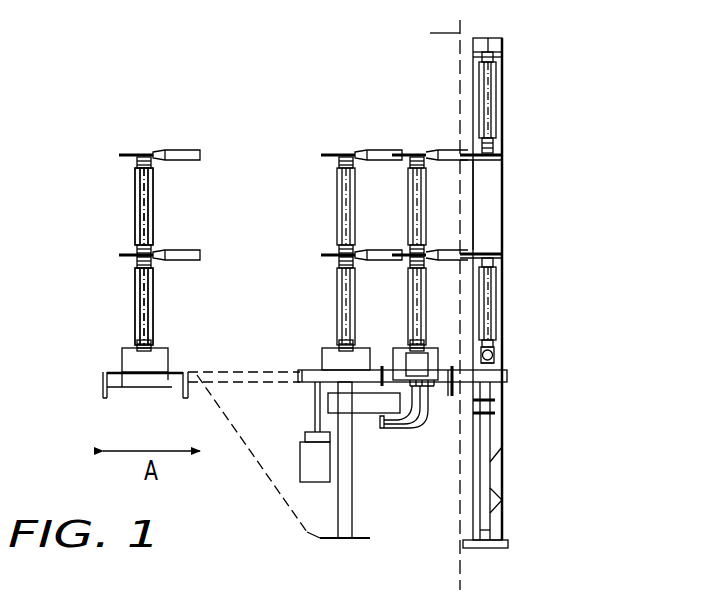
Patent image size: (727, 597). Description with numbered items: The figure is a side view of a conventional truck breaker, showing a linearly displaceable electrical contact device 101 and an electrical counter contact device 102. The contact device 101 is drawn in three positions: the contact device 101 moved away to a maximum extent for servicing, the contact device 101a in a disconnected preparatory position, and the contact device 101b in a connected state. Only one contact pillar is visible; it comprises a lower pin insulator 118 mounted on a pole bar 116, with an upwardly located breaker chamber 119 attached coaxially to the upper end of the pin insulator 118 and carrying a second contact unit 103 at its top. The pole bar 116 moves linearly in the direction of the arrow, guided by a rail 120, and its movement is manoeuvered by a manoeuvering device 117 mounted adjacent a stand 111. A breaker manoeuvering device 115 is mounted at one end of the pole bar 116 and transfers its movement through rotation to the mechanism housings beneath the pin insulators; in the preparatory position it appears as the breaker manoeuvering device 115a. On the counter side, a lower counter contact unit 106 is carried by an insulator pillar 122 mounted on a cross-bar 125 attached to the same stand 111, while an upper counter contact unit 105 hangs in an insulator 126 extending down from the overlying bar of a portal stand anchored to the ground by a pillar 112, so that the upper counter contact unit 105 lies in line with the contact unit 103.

The contact device 101 is at (104, 206).
The contact device in disconnected preparatory position 101a is at (347, 149).
The contact device in connected position 101b is at (418, 149).
The electrical counter contact device 102 is at (533, 277).
The contact unit 103 is at (182, 150).
The upper counter contact unit 105 is at (490, 158).
The lower counter contact unit 106 is at (490, 262).
The stand 111 is at (306, 533).
The pillar 112 is at (496, 207).
The breaker manoeuvering device 115 is at (122, 363).
The breaker manoeuvering device 115a is at (333, 355).
The pole bar 116 is at (406, 350).
The manoeuvering device 117 is at (305, 470).
The pin insulator 118 is at (134, 305).
The breaker chamber 119 is at (134, 210).
The rail 120 is at (507, 375).
The insulator pillar 122 is at (499, 310).
The cross-bar 125 is at (500, 352).
The insulator 126 is at (488, 108).